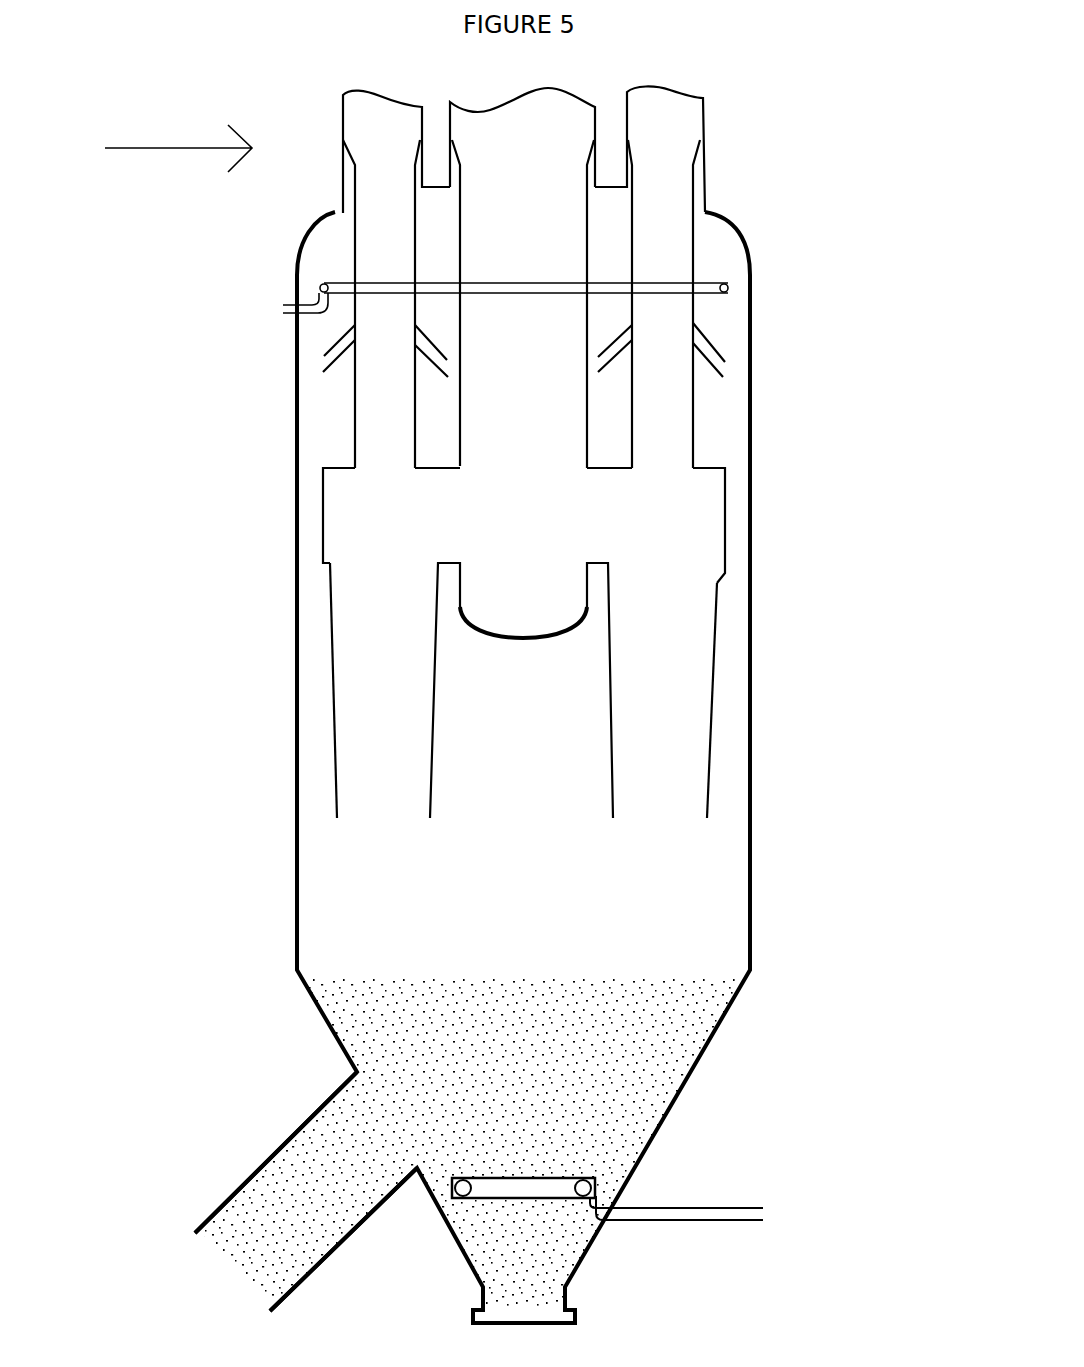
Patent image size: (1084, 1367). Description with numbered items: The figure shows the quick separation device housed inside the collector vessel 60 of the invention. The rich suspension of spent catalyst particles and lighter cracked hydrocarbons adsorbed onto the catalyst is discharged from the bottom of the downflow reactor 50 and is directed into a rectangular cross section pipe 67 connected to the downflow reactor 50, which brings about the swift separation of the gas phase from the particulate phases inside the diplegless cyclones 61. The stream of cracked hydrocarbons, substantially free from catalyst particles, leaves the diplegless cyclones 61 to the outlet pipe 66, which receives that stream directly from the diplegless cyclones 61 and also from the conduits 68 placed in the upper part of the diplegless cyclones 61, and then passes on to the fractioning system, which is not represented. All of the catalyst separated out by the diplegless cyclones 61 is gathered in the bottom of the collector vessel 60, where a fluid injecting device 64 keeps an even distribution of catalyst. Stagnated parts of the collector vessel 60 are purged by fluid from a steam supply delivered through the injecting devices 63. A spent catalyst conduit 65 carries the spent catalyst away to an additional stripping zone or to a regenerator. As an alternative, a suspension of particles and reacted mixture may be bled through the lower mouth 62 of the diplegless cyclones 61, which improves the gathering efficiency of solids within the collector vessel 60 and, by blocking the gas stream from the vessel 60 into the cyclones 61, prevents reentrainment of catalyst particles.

The downflow reactor 50 is at (522, 278).
The collector vessel 60 is at (178, 141).
The diplegless cyclones 61 is at (663, 593).
The lower mouth 62 is at (710, 802).
The injecting devices 63 is at (320, 287).
The fluid injecting device 64 is at (530, 1188).
The spent catalyst conduit 65 is at (298, 1168).
The outlet pipe 66 is at (663, 241).
The rectangular cross section pipe 67 is at (597, 513).
The conduits 68 is at (330, 359).